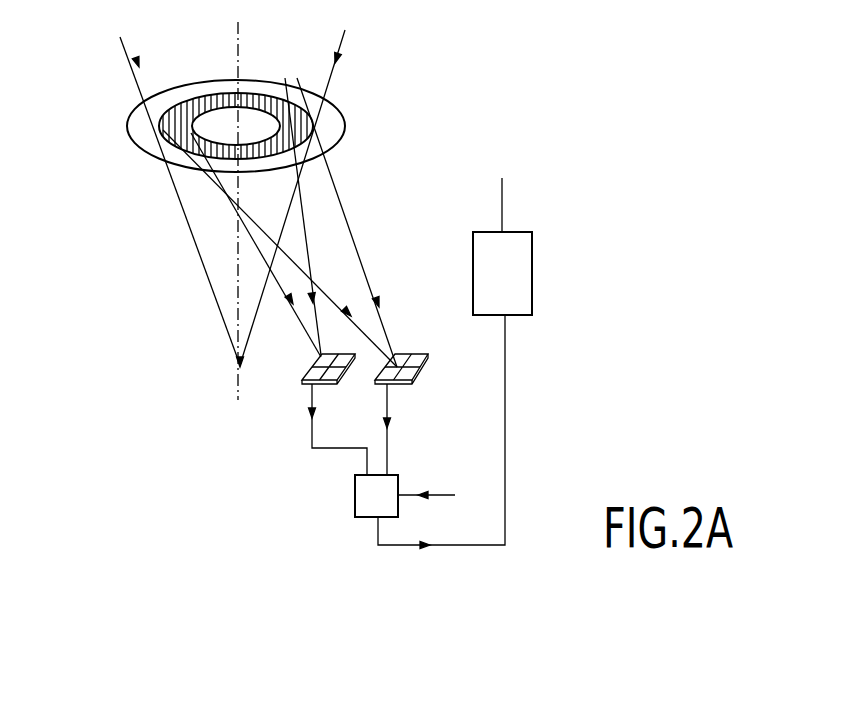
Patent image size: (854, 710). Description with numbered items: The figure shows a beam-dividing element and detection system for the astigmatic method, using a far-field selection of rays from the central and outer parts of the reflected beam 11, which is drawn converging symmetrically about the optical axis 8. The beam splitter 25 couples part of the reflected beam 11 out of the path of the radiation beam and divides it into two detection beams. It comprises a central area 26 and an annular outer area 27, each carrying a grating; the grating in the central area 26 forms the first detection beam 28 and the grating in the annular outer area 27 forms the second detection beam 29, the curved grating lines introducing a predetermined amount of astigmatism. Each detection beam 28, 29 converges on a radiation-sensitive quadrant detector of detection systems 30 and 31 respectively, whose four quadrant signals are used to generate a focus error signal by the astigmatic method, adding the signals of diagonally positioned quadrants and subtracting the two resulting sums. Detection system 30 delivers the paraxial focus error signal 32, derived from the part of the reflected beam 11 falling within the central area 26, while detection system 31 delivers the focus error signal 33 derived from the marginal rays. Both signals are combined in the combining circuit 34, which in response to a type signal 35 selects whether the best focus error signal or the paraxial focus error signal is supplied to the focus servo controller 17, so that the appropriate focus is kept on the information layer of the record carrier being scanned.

The optical axis 8 is at (236, 33).
The reflected beam 11 is at (130, 38).
The focus servo controller 17 is at (533, 267).
The beam splitter 25 is at (340, 107).
The central area 26 is at (258, 126).
The annular outer area 27 is at (265, 100).
The first detection beam 28 is at (298, 213).
The second detection beam 29 is at (356, 238).
The detection system 30 is at (303, 392).
The detection system 31 is at (410, 392).
The focus error signal 32 is at (305, 440).
The focus error signal 33 is at (390, 453).
The combining circuit 34 is at (353, 497).
The type signal 35 is at (443, 495).